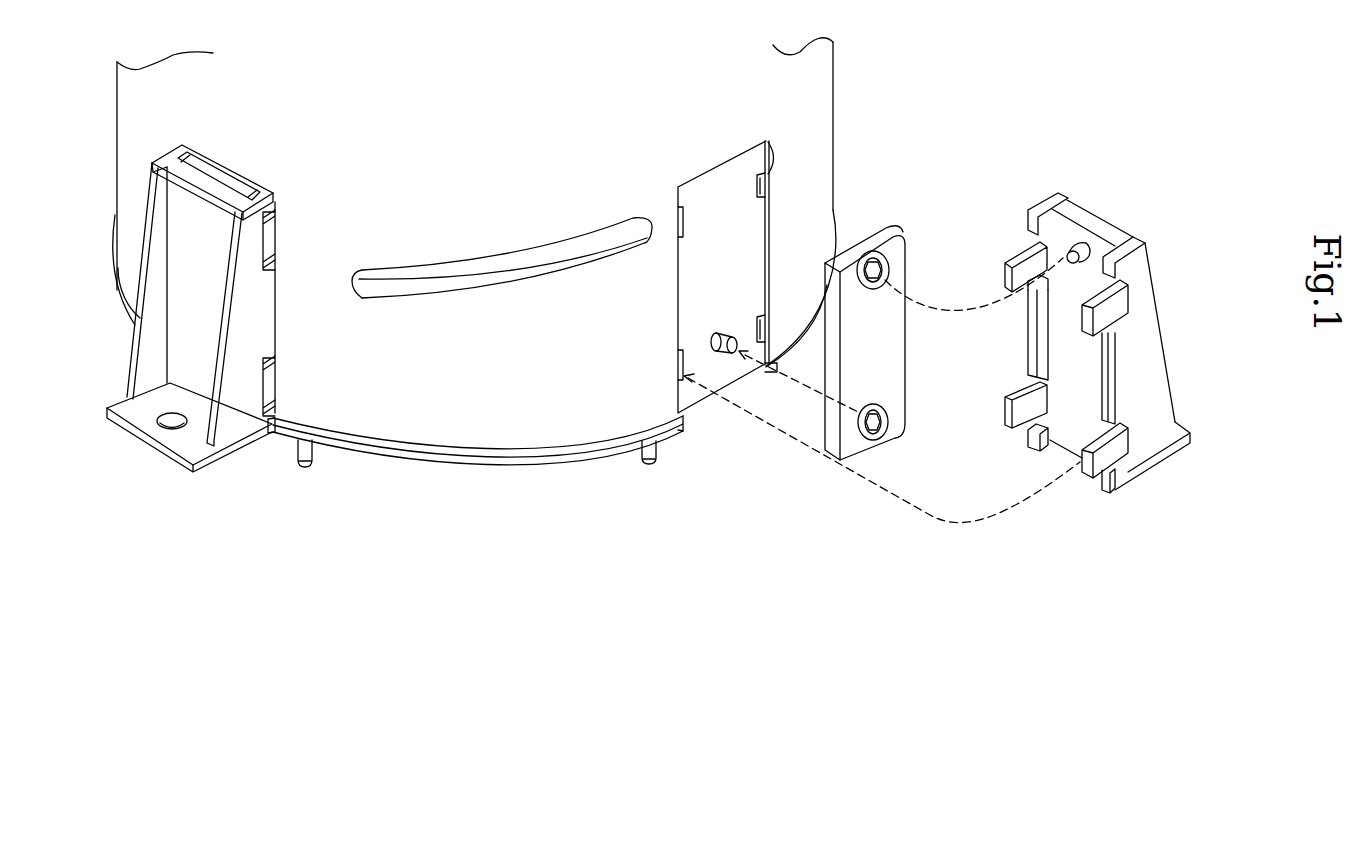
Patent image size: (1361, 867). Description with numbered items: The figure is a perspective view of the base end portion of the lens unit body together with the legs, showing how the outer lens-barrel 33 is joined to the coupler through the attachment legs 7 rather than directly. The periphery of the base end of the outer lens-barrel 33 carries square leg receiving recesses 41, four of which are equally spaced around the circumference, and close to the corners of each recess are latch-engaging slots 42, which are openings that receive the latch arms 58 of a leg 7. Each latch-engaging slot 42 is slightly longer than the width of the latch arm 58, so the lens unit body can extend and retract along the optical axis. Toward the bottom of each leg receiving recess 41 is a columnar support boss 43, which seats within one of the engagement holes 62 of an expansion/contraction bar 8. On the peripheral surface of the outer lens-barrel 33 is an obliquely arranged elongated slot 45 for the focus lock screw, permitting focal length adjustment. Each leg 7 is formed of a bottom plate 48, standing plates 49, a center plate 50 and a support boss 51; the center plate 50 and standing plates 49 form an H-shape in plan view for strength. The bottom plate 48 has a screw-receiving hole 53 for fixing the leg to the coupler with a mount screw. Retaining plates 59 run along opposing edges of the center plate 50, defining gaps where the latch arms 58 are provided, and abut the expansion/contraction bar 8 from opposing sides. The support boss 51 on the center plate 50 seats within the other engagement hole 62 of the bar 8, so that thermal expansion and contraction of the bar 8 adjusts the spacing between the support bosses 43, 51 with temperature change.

The attachment leg 7 is at (140, 193).
The expansion/contraction bar 8 is at (877, 357).
The outer lens-barrel 33 is at (417, 428).
The leg receiving recess 41 is at (720, 197).
The latch-engaging slot 42 is at (678, 355).
The support boss 43 is at (712, 336).
The elongated slot 45 is at (487, 265).
The bottom plate 48 is at (137, 445).
The standing plate 49 is at (130, 357).
The center plate 50 is at (183, 292).
The support boss 51 is at (1073, 247).
The screw-receiving hole 53 is at (165, 427).
The latch arm 58 is at (273, 239).
The retaining plate 59 is at (273, 203).
The engagement hole 62 is at (873, 250).